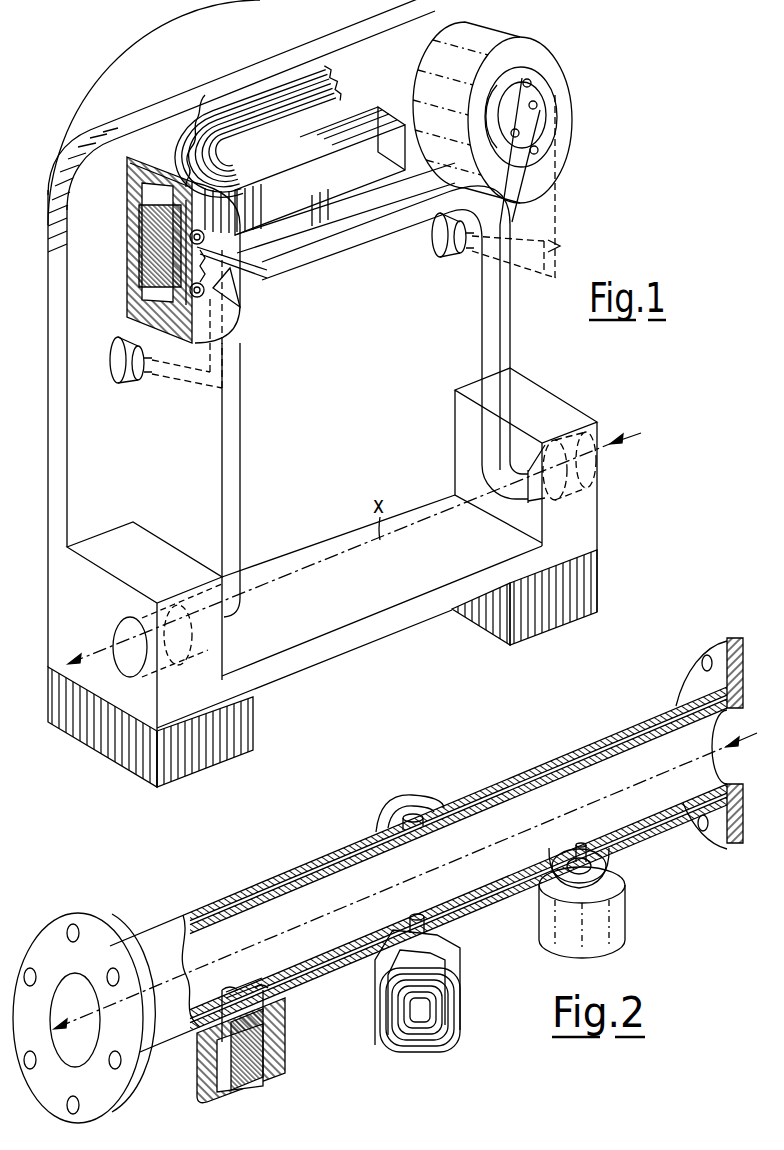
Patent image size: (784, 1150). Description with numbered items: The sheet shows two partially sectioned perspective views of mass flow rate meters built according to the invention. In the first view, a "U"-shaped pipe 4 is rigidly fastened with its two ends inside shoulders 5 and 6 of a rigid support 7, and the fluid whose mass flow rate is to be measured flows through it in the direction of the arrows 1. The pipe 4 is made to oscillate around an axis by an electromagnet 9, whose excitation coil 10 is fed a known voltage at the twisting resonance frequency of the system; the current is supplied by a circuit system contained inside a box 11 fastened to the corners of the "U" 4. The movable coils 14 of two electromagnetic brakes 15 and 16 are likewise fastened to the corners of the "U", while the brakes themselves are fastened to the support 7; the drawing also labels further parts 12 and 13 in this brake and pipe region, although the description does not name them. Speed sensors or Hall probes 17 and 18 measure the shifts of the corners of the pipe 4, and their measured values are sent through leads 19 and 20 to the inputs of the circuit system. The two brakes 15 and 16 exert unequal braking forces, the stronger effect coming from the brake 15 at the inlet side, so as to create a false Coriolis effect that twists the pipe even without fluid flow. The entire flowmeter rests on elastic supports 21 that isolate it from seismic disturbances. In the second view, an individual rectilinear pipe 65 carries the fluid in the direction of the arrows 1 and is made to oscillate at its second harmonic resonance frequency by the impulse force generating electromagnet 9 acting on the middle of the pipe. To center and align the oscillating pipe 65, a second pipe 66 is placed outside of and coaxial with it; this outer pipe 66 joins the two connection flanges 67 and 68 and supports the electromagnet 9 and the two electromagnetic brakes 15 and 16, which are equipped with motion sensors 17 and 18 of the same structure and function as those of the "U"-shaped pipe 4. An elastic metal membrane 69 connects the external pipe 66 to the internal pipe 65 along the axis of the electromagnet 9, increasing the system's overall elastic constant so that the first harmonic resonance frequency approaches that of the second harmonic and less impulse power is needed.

In FIG. 1, the arrows 1 is at (90, 655).
In FIG. 2, the arrows 1 is at (80, 1013).
In FIG. 1, the "U"-shaped pipe 4 is at (230, 475).
In FIG. 1, the shoulder 5 is at (548, 408).
In FIG. 1, the shoulder 6 is at (170, 565).
In FIG. 1, the rigid support 7 is at (77, 443).
In FIG. 1, the electromagnet 9 is at (367, 147).
In FIG. 2, the electromagnet 9 is at (478, 988).
In FIG. 1, the excitation coil 10 is at (210, 133).
In FIG. 2, the excitation coil 10 is at (427, 1053).
In FIG. 1, the box 11 is at (163, 72).
In FIG. 1, the connecting tube 12 is at (502, 176).
In FIG. 2, the connecting tube 12 is at (583, 847).
In FIG. 1, the leaf spring 13 is at (232, 273).
In FIG. 2, the leaf spring 13 is at (243, 993).
In FIG. 1, the movable coils 14 is at (150, 254).
In FIG. 2, the movable coils 14 is at (247, 1050).
In FIG. 1, the electromagnetic brake 15 is at (485, 38).
In FIG. 2, the electromagnetic brake 15 is at (612, 917).
In FIG. 1, the electromagnetic brake 16 is at (155, 165).
In FIG. 2, the electromagnetic brake 16 is at (200, 1072).
In FIG. 1, the speed sensor or Hall probe 17 is at (548, 120).
In FIG. 2, the speed sensor or Hall probe 17 is at (606, 868).
In FIG. 1, the speed sensor or Hall probe 18 is at (200, 303).
In FIG. 2, the speed sensor or Hall probe 18 is at (297, 990).
In FIG. 1, the lead 19 is at (513, 186).
In FIG. 1, the lead 20 is at (182, 404).
In FIG. 1, the elastic supports 21 is at (107, 733).
In FIG. 2, the rectilinear pipe 65 is at (302, 907).
In FIG. 2, the outer pipe 66 is at (163, 930).
In FIG. 2, the connection flange 67 is at (688, 674).
In FIG. 2, the connection flange 68 is at (57, 937).
In FIG. 2, the elastic metal membrane 69 is at (393, 818).